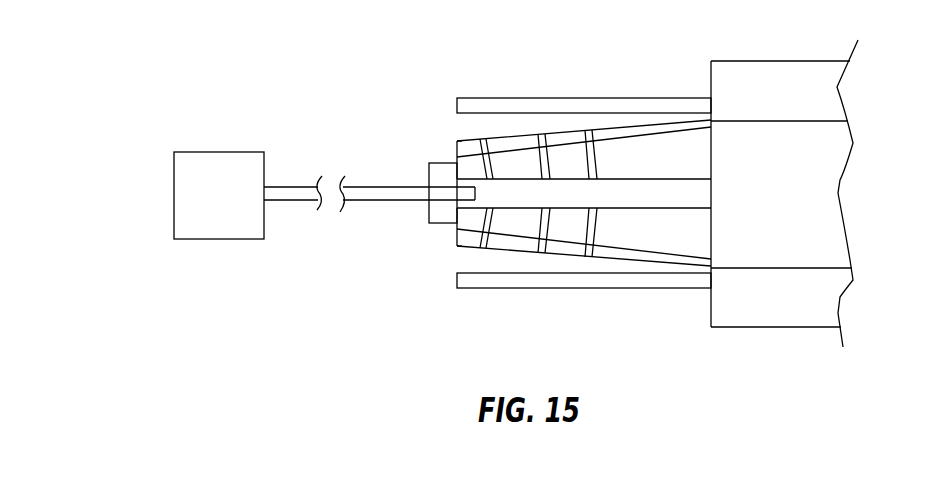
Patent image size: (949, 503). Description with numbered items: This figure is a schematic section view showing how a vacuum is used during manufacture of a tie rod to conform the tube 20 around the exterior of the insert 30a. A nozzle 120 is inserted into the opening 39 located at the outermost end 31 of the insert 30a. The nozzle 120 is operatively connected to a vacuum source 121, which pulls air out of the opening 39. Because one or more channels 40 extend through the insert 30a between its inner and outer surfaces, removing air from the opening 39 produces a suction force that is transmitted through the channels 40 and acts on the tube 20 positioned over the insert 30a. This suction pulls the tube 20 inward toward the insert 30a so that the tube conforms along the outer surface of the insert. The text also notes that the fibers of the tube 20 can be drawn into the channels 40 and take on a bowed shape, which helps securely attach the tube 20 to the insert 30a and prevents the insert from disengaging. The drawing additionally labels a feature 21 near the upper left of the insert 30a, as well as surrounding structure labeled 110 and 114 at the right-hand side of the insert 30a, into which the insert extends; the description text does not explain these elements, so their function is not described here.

The tube 20 is at (470, 138).
The first suture end 21 is at (456, 146).
The insert 30a is at (643, 154).
The outermost end 31 is at (455, 228).
The opening 39 is at (640, 197).
The channels 40 is at (586, 142).
The bone 110 is at (768, 83).
The cannula tube 114 is at (488, 99).
The nozzle 120 is at (402, 196).
The vacuum source 121 is at (210, 222).